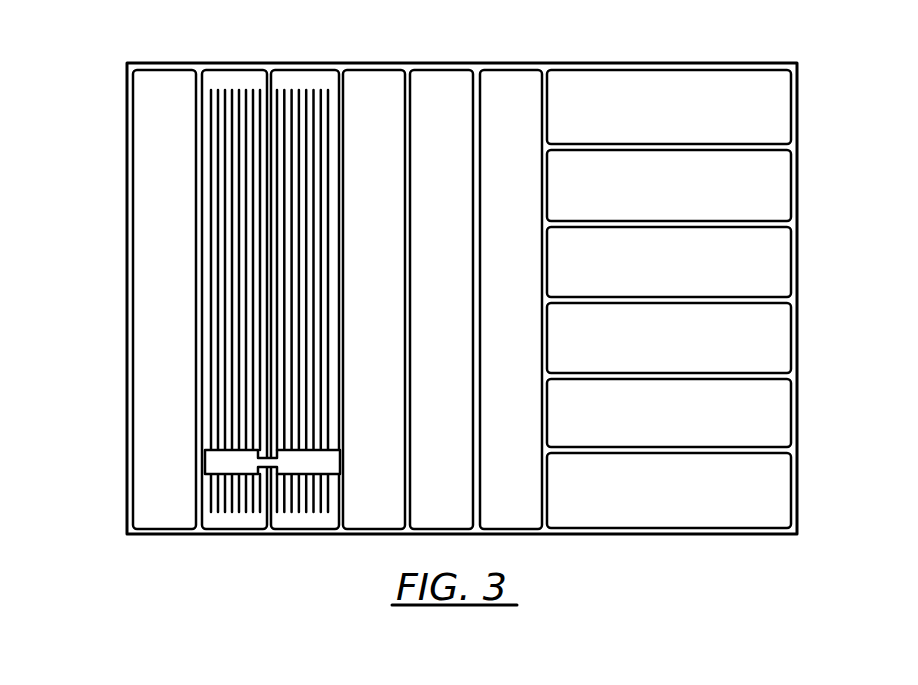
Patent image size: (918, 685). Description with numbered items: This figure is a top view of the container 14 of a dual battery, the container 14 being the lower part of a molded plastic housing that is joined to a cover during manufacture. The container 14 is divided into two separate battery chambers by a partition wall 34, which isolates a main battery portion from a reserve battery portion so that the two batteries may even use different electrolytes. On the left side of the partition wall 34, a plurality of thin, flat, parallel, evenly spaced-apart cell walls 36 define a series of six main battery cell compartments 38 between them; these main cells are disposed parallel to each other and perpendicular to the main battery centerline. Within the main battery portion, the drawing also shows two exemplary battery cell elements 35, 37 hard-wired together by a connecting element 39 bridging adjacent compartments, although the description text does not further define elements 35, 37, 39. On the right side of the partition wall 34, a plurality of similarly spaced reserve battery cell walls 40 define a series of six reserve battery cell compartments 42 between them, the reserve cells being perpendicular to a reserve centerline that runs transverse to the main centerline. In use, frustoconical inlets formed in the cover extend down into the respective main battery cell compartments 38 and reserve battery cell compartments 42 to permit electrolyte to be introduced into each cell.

The container 14 is at (127, 462).
The partition wall 34 is at (550, 113).
The heater element array 35 is at (230, 90).
The cell walls 36 is at (410, 183).
The heater elements 37 is at (325, 88).
The main battery cell compartments 38 is at (375, 82).
The connecting bar 39 is at (253, 463).
The reserve battery cell walls 40 is at (700, 417).
The reserve battery cell compartments 42 is at (700, 299).